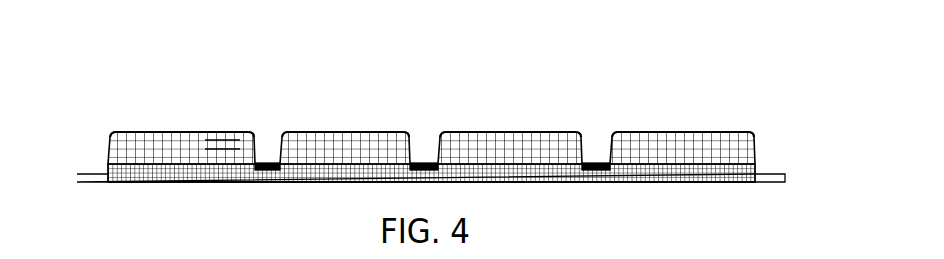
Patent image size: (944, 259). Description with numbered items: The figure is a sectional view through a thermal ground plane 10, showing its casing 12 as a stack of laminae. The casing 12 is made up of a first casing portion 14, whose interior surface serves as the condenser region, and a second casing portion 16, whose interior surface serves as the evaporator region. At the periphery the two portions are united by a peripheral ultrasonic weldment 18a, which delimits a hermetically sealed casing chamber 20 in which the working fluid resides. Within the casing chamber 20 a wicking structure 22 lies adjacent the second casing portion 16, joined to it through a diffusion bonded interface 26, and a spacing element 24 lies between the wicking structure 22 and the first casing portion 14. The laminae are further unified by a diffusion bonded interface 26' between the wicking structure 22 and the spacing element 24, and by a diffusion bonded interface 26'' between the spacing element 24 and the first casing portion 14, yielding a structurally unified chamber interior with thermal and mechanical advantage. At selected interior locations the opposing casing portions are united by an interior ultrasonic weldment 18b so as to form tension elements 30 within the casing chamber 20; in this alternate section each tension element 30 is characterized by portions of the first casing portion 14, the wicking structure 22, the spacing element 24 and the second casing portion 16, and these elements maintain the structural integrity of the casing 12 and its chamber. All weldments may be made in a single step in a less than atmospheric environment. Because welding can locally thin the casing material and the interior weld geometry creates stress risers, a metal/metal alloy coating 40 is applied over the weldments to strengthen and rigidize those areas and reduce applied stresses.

The thermal ground plane 10 is at (713, 109).
The casing 12 is at (757, 148).
The first casing portion 14 is at (121, 131).
The second casing portion 16 is at (158, 182).
The peripheral ultrasonic weldment 18a is at (87, 182).
The interior ultrasonic weldment 18b is at (255, 182).
The casing chamber 20 is at (655, 140).
The diffusion bonded interface 26'' is at (182, 109).
The wicking structure 22 is at (650, 183).
The spacing element 24 is at (503, 157).
The diffusion bonded interface 26 is at (691, 212).
The diffusion bonded interface 26' is at (229, 131).
The tension element 30 is at (427, 159).
The metal/metal alloy coating 40 is at (268, 162).